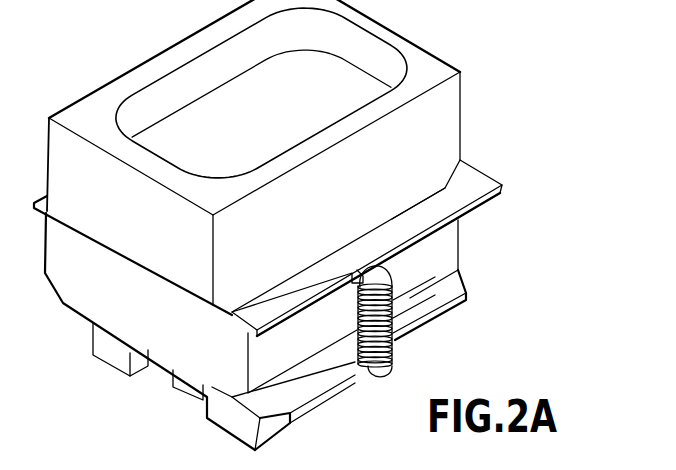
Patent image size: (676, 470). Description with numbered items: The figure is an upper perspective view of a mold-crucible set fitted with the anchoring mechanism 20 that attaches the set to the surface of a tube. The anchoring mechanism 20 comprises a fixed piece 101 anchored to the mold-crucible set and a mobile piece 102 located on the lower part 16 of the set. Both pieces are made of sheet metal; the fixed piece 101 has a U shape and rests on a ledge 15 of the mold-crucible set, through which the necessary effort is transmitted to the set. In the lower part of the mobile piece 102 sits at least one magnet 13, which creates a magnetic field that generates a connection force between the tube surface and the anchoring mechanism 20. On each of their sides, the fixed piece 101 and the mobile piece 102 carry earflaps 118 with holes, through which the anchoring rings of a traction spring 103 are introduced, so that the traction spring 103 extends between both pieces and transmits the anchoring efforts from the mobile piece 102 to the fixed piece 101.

The anchoring mechanism 20 is at (526, 191).
The fixed piece 101 is at (477, 177).
The mobile piece 102 is at (457, 290).
The traction spring 103 is at (396, 318).
The earflaps 118 is at (363, 271).
The magnet 13 is at (143, 357).
The ledge 15 is at (200, 386).
The lower part 16 is at (233, 422).